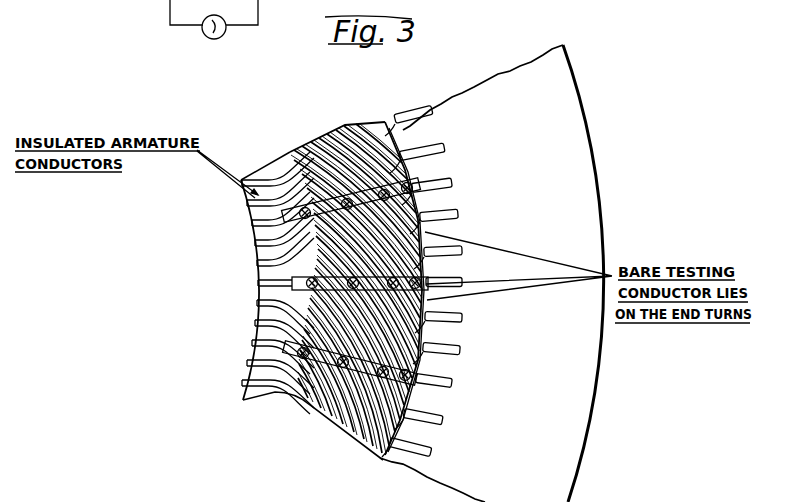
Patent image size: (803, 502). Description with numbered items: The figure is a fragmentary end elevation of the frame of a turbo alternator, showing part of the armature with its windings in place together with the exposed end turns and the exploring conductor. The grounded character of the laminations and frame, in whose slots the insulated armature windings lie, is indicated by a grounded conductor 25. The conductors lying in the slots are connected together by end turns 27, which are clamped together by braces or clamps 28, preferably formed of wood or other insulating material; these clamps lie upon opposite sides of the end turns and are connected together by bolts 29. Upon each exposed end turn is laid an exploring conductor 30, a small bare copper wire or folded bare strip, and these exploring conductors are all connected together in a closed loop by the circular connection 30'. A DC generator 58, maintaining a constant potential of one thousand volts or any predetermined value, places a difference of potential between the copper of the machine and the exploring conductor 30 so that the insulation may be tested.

The grounded conductor 25 is at (258, 307).
The end turns 27 is at (440, 229).
The braces or clamps 28 is at (462, 300).
The bolts 29 is at (440, 382).
The exploring conductor 30 is at (348, 279).
The circular connection 30' is at (451, 281).
The DC generator 58 is at (216, 40).